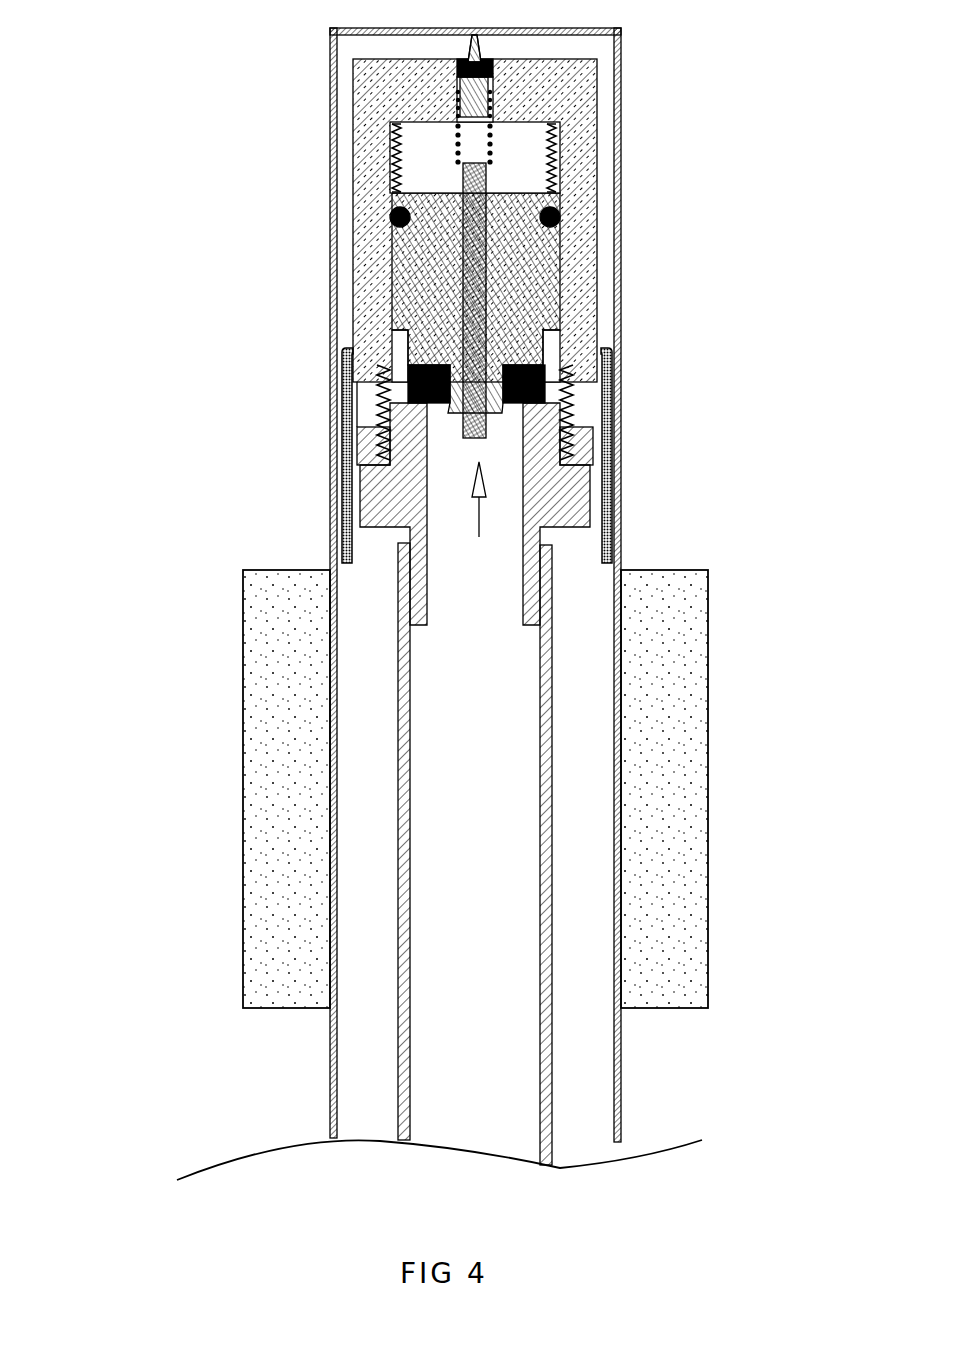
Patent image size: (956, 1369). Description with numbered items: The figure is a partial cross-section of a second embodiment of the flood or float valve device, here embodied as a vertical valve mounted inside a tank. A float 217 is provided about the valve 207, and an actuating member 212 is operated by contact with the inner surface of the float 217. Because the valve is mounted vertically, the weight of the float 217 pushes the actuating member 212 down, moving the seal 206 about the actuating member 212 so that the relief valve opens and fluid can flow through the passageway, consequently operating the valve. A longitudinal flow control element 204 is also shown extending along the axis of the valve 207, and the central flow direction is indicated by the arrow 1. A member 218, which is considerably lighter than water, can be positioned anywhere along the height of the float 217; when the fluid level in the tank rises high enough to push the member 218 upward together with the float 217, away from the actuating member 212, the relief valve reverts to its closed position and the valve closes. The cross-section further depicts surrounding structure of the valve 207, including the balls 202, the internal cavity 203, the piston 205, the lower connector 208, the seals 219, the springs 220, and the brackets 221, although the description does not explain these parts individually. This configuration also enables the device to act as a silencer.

The flow direction arrow 1 is at (480, 524).
The balls 202 is at (463, 213).
The cavity 203 is at (418, 150).
The longitudinal flow control element 204 is at (463, 307).
The piston 205 is at (463, 262).
The seal 206 is at (455, 70).
The valve 207 is at (547, 272).
The connector 208 is at (578, 502).
The actuating member 212 is at (500, 90).
The float 217 is at (622, 92).
The member 218 is at (255, 583).
The seals 219 is at (545, 405).
The springs 220 is at (553, 147).
The brackets 221 is at (350, 398).